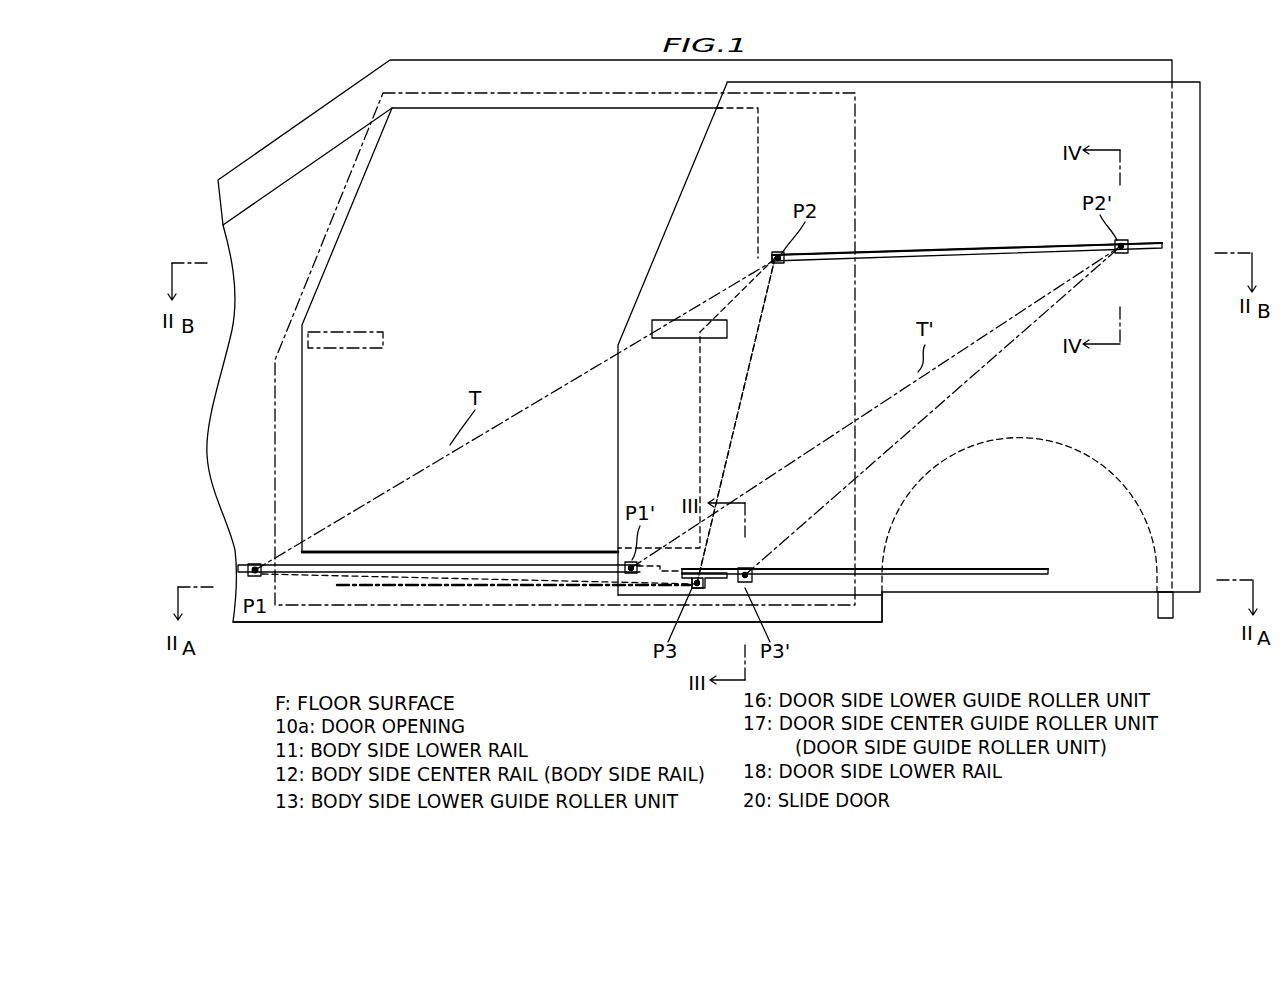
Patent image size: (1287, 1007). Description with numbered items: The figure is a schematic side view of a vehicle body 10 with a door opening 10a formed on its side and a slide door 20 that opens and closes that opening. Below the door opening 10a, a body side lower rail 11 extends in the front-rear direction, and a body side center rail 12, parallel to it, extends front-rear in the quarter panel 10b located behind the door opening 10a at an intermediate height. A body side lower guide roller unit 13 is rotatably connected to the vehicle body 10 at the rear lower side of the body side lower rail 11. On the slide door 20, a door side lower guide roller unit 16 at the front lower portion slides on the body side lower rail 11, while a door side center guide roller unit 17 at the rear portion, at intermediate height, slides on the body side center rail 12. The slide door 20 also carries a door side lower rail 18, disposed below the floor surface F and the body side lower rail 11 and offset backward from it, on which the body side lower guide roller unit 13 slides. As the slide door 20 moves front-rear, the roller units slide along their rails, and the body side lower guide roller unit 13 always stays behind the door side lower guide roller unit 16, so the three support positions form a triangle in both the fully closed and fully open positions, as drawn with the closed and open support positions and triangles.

The vehicle body 10 is at (268, 143).
The door opening 10a is at (590, 110).
The quarter panel 10b is at (848, 615).
The body side lower rail 11 is at (462, 563).
The body side center rail 12 is at (953, 250).
The body side lower guide roller unit 13 is at (742, 585).
The door side lower guide roller unit 16 is at (255, 562).
The door side center guide roller unit 17 is at (785, 263).
The door side lower rail 18 is at (390, 588).
The slide door 20 is at (357, 157).
The floor surface F is at (547, 550).